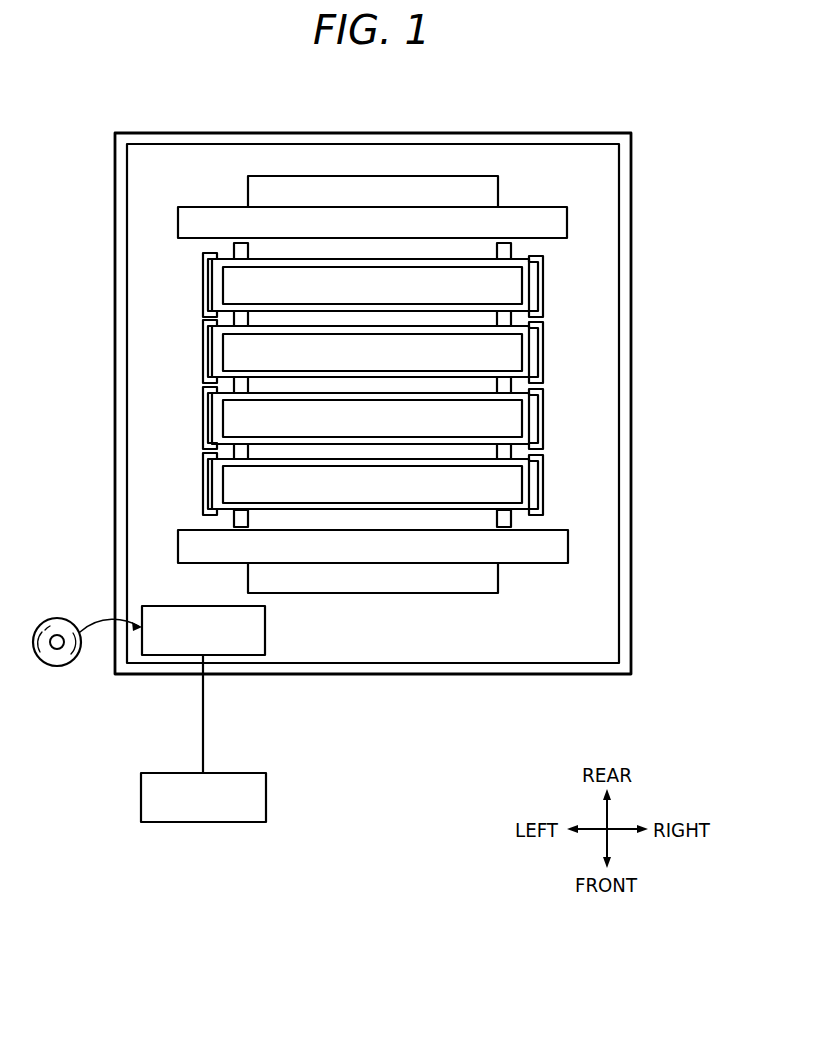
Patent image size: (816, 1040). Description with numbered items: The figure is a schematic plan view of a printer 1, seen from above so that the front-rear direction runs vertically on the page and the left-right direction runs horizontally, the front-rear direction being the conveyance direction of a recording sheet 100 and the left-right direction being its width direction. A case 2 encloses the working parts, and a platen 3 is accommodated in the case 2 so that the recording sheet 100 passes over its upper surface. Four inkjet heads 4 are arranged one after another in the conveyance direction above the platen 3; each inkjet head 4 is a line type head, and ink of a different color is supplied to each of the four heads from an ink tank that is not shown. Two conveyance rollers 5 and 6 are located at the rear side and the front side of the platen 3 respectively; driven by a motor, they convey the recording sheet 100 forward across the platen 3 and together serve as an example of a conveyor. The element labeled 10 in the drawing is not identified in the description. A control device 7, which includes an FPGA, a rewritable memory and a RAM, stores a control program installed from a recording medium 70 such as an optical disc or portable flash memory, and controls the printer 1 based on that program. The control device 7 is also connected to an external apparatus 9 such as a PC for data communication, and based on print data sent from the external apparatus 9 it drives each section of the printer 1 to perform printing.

The printer 1 is at (577, 114).
The case 2 is at (568, 676).
The platen 3 is at (236, 246).
The inkjet head 4 is at (522, 254).
The conveyance roller 5 is at (550, 207).
The conveyance roller 6 is at (533, 564).
The control device 7 is at (196, 606).
The external apparatus 9 is at (202, 823).
The tray 10 is at (528, 414).
The recording medium 70 is at (60, 618).
The recording sheet 100 is at (498, 187).